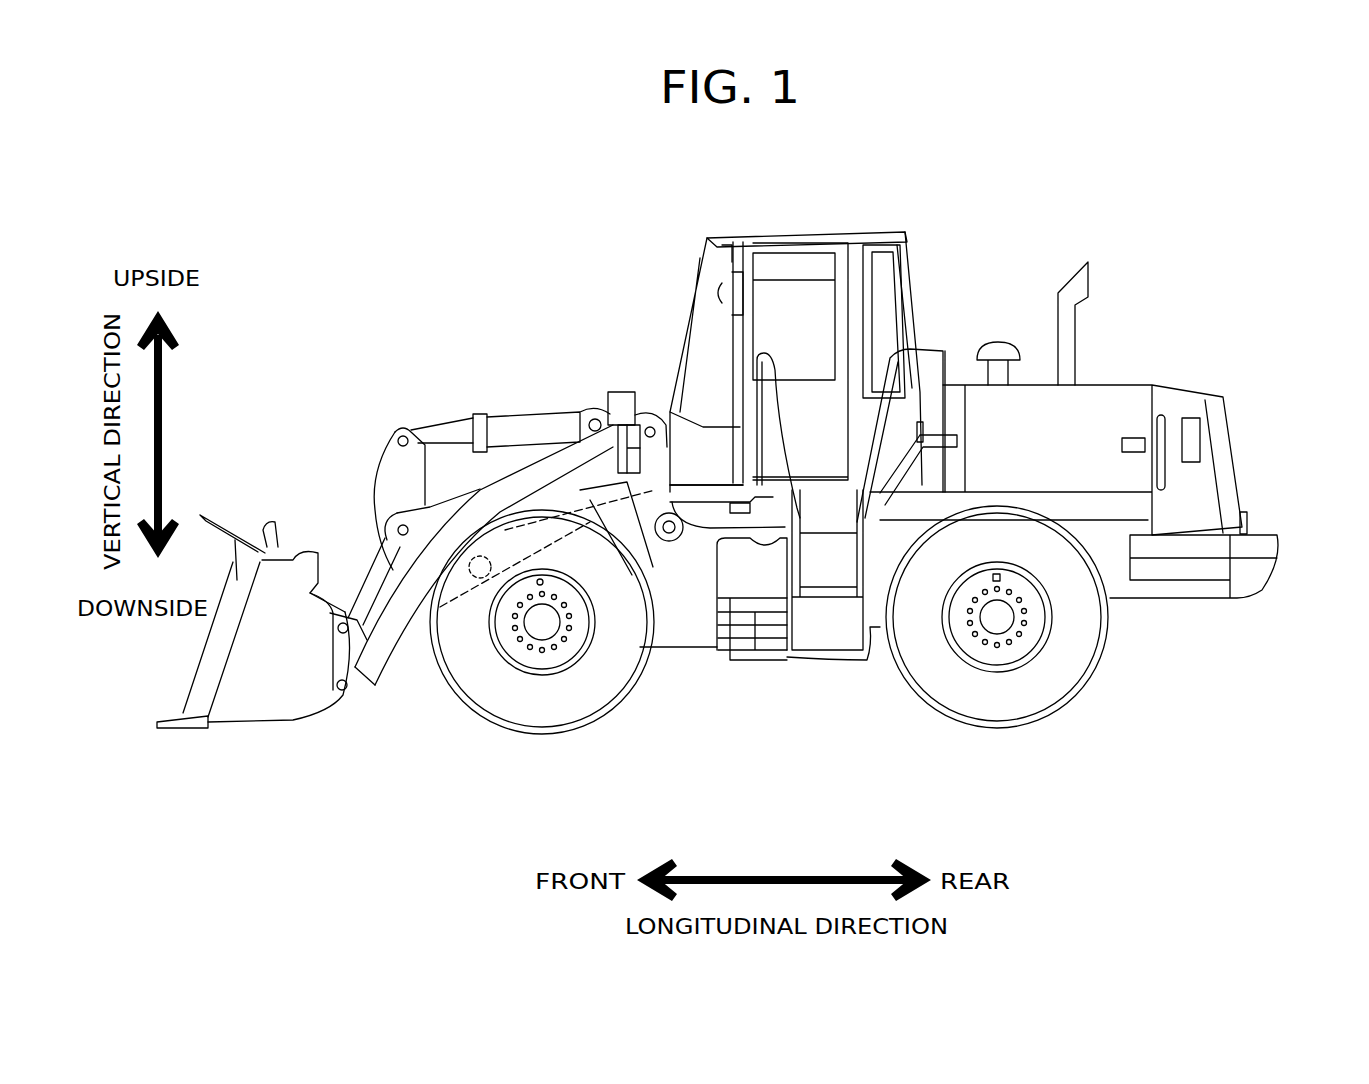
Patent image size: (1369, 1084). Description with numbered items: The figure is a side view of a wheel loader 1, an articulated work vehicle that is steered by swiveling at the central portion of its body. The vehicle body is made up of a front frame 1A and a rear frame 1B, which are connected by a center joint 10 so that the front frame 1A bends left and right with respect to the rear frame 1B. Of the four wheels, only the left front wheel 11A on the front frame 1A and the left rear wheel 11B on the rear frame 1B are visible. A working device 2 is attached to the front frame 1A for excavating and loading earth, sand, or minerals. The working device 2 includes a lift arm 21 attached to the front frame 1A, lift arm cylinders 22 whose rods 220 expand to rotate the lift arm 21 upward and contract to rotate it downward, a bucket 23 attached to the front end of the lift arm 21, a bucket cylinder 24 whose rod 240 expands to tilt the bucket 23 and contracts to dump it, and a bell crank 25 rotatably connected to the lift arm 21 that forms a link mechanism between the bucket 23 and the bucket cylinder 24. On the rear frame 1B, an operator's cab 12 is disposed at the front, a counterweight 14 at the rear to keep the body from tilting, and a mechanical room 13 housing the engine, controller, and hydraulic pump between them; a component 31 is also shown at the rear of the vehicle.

The wheel loader 1 is at (345, 238).
The front frame 1A is at (525, 302).
The rear frame 1B is at (1003, 240).
The working device 2 is at (376, 722).
The center joint 10 is at (748, 672).
The front wheel 11A is at (575, 705).
The rear wheel 11B is at (992, 713).
The operator's cab 12 is at (717, 266).
The mechanical room 13 is at (1125, 393).
The counterweight 14 is at (1275, 575).
The lift arm 21 is at (392, 647).
The lift arm cylinder 22 is at (592, 558).
The rod 220 is at (498, 565).
The bucket 23 is at (250, 712).
The bucket cylinder 24 is at (535, 422).
The rod 240 is at (435, 430).
The bell crank 25 is at (393, 497).
The rear lamp 31 is at (1247, 520).